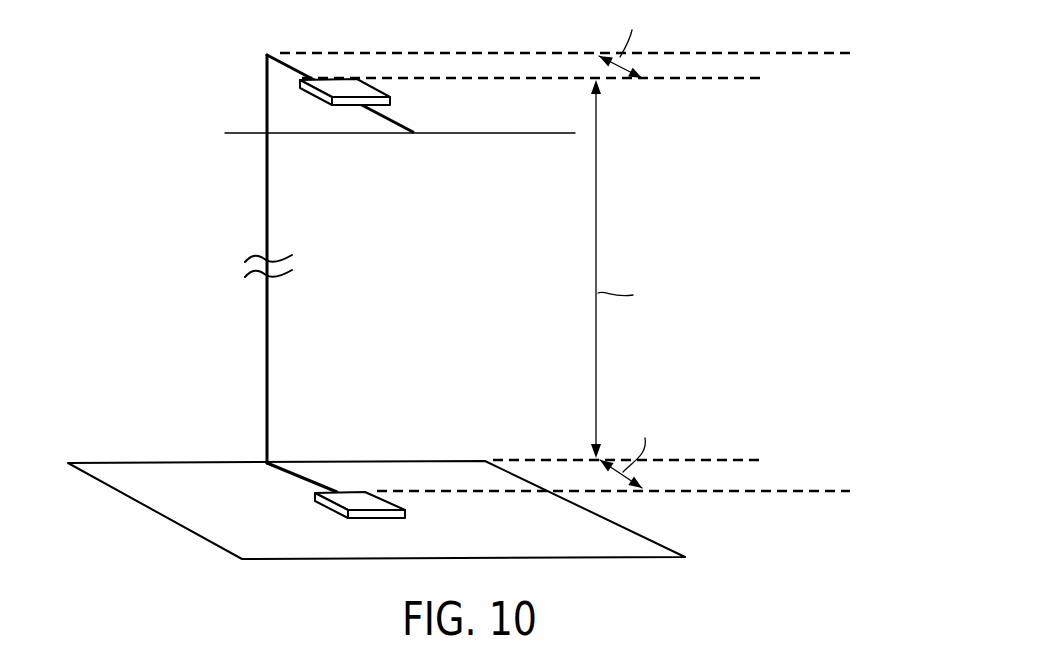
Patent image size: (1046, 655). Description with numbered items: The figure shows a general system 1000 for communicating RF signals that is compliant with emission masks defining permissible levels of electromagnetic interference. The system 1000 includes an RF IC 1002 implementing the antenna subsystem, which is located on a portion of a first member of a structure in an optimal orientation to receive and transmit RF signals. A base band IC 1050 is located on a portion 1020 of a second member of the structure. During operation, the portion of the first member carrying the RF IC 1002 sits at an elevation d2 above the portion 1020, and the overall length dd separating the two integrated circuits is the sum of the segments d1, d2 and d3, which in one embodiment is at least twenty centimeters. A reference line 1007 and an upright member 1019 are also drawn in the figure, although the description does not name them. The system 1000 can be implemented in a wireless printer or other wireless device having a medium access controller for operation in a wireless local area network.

The system 1000 is at (152, 46).
The RF IC 1002 is at (390, 100).
The reference line 1007 is at (424, 135).
The vertical pole 1019 is at (268, 318).
The portion of second member 1020 is at (658, 540).
The base band IC 1050 is at (405, 515).